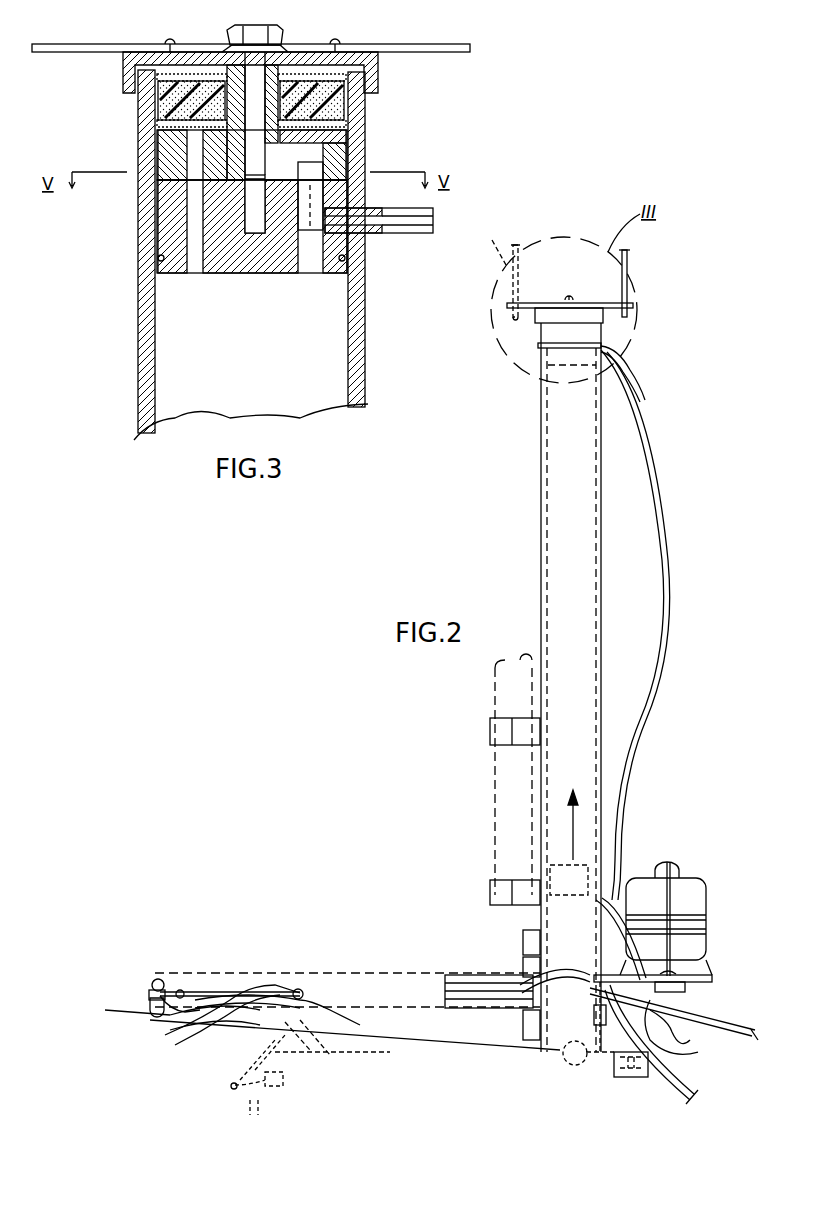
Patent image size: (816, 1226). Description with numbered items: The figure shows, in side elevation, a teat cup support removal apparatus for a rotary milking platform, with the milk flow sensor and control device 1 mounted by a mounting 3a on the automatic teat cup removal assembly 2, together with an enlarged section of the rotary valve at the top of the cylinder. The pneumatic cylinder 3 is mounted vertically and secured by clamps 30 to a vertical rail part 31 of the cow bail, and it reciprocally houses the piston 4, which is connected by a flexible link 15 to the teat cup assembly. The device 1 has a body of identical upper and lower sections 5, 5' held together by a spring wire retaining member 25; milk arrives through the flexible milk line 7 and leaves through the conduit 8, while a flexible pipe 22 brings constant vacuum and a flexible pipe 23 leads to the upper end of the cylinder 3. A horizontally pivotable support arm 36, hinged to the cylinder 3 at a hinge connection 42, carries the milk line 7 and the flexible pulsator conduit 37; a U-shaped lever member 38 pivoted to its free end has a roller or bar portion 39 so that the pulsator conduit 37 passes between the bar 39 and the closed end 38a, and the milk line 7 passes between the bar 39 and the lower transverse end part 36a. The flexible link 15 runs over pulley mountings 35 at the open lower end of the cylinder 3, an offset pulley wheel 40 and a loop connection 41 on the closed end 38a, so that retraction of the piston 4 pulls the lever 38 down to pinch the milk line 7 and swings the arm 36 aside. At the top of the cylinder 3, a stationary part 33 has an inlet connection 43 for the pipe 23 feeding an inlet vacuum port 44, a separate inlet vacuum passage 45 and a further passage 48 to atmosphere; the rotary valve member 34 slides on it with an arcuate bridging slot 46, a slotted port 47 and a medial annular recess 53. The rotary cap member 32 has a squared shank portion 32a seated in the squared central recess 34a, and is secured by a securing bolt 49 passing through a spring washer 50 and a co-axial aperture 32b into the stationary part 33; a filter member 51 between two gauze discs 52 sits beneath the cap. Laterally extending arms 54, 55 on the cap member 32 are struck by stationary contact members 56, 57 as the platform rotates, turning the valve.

In FIG. 2, the sensor and control device 1 is at (682, 835).
In FIG. 2, the automatic teat cup removal assembly 2 is at (452, 822).
In FIG. 2, the pneumatic cylinder 3 is at (541, 548).
In FIG. 2, the mounting 3a is at (706, 980).
In FIG. 2, the piston 4 is at (560, 865).
In FIG. 2, the upper body section 5 is at (679, 918).
In FIG. 2, the lower body section 5' is at (725, 944).
In FIG. 2, the flexible milk line 7 is at (200, 1030).
In FIG. 2, the conduit 8 is at (676, 1068).
In FIG. 2, the flexible link 15 is at (470, 1045).
In FIG. 2, the flexible pipe 22 is at (705, 1055).
In FIG. 2, the flexible pipe 23 is at (664, 590).
In FIG. 2, the retaining member 25 is at (670, 892).
In FIG. 2, the clamps 30 is at (493, 725).
In FIG. 2, the vertical rail part 31 is at (495, 760).
In FIG. 3, the rotary cap member 32 is at (376, 60).
In FIG. 2, the rotary cap member 32 is at (603, 312).
In FIG. 3, the squared shank portion 32a is at (350, 118).
In FIG. 3, the co-axial aperture 32b is at (230, 48).
In FIG. 3, the stationary part 33 is at (162, 215).
In FIG. 3, the rotary valve member 34 is at (157, 176).
In FIG. 3, the squared central recess 34a is at (310, 142).
In FIG. 2, the pulley mountings 35 is at (570, 1065).
In FIG. 2, the support arm 36 is at (405, 973).
In FIG. 2, the lower transverse end part 36a is at (325, 1060).
In FIG. 2, the flexible pulsator conduit 37 is at (722, 1037).
In FIG. 2, the U-shaped lever member 38 is at (270, 1000).
In FIG. 2, the closed end 38a is at (195, 990).
In FIG. 2, the roller or bar portion 39 is at (245, 988).
In FIG. 2, the pulley wheel 40 is at (640, 1078).
In FIG. 2, the pulley or loop connection 41 is at (152, 985).
In FIG. 2, the hinge connection 42 is at (523, 940).
In FIG. 3, the inlet connection 43 is at (425, 222).
In FIG. 2, the inlet connection 43 is at (620, 348).
In FIG. 3, the inlet vacuum port 44 is at (315, 202).
In FIG. 3, the inlet vacuum passage 45 is at (360, 296).
In FIG. 3, the arcuate bridging slot 46 is at (310, 168).
In FIG. 3, the slotted port 47 is at (195, 163).
In FIG. 3, the passage 48 is at (195, 234).
In FIG. 3, the securing bolt 49 is at (258, 72).
In FIG. 3, the spring washer 50 is at (258, 52).
In FIG. 3, the filter member 51 is at (300, 118).
In FIG. 3, the gauze or mesh discs 52 is at (160, 118).
In FIG. 3, the medial annular recess 53 is at (170, 132).
In FIG. 2, the laterally extending arm 54 is at (595, 300).
In FIG. 2, the laterally extending arm 55 is at (535, 300).
In FIG. 2, the stationary contact member 56 is at (627, 262).
In FIG. 2, the stationary contact member 57 is at (487, 246).